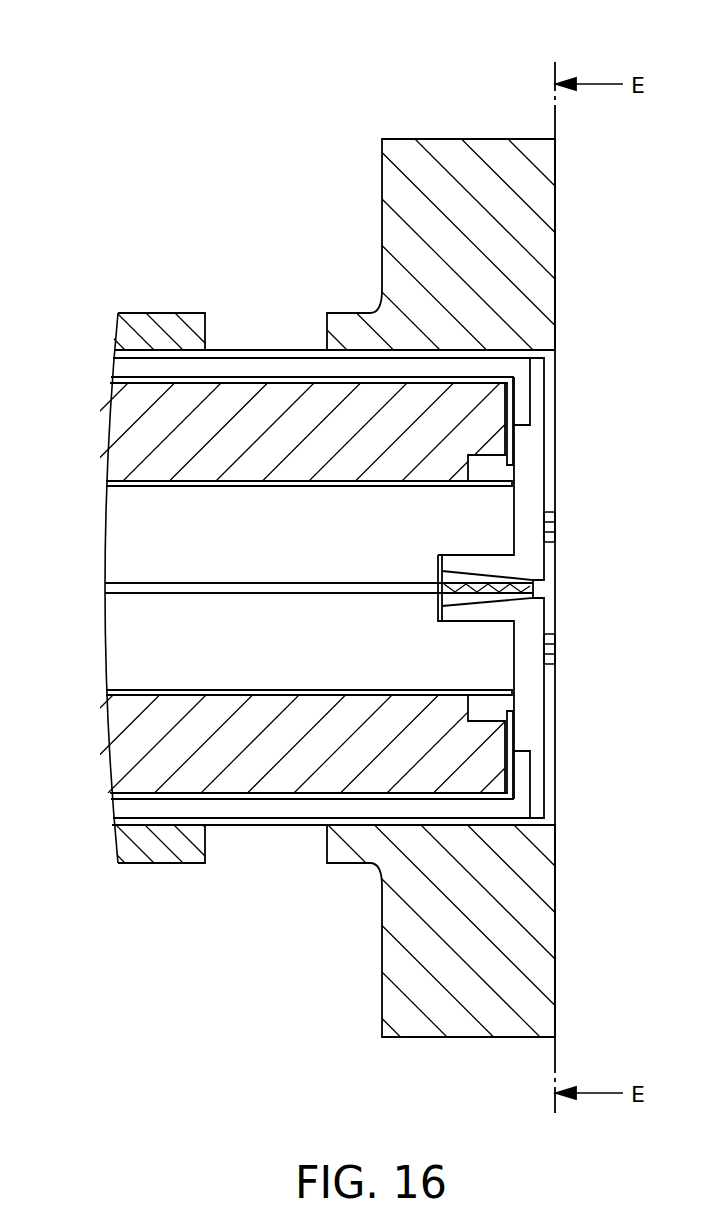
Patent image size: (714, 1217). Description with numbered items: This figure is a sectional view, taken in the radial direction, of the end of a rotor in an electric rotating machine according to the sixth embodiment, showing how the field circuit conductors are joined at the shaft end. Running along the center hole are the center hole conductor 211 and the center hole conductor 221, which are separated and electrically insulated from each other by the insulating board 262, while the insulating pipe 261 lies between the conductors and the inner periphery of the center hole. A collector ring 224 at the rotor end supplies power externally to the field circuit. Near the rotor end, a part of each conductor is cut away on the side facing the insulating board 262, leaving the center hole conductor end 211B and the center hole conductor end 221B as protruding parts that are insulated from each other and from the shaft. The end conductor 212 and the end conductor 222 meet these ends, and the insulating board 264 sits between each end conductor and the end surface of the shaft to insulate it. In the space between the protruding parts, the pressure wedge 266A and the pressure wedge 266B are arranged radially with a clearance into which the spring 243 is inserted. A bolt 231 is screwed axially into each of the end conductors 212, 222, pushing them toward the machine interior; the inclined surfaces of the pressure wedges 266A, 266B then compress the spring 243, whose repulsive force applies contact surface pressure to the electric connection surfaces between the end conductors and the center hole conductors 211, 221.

The collector ring 224 is at (163, 321).
The insulating board 264 is at (512, 402).
The end conductor 212 is at (535, 481).
The center hole conductor 211 is at (135, 512).
The center hole conductor end 211B is at (500, 503).
The bolt 231 is at (557, 527).
The pressure wedge 266A is at (462, 578).
The pressure wedge 266B is at (462, 600).
The spring 243 is at (548, 589).
The insulating board 262 is at (140, 588).
The insulating pipe 261 is at (140, 690).
The center hole conductor 221 is at (135, 622).
The center hole conductor end 221B is at (498, 675).
The end conductor 222 is at (535, 689).